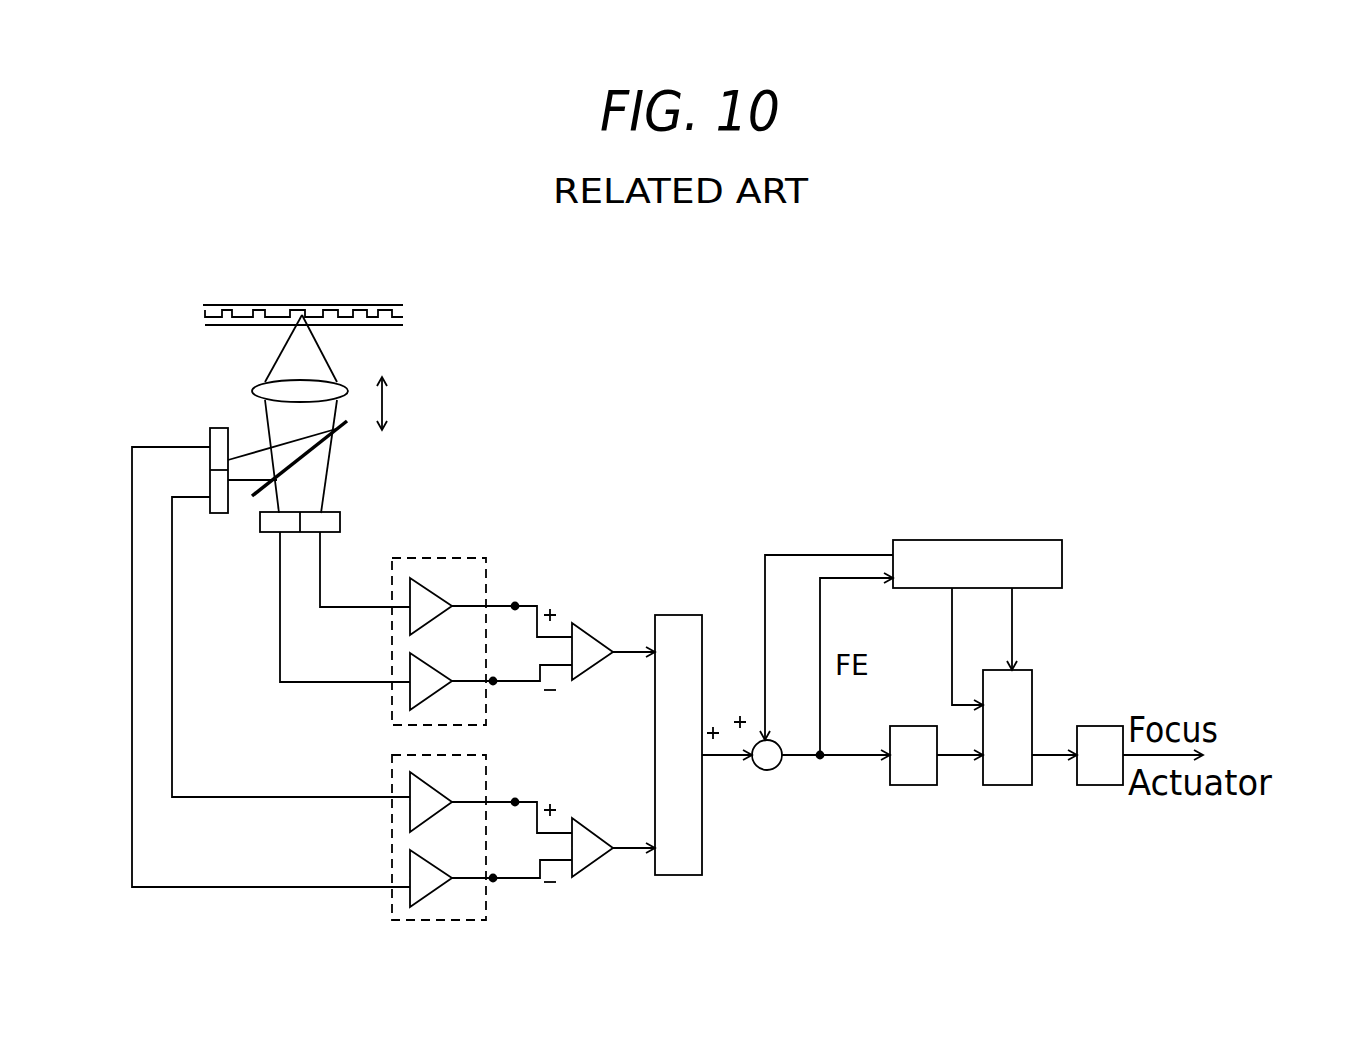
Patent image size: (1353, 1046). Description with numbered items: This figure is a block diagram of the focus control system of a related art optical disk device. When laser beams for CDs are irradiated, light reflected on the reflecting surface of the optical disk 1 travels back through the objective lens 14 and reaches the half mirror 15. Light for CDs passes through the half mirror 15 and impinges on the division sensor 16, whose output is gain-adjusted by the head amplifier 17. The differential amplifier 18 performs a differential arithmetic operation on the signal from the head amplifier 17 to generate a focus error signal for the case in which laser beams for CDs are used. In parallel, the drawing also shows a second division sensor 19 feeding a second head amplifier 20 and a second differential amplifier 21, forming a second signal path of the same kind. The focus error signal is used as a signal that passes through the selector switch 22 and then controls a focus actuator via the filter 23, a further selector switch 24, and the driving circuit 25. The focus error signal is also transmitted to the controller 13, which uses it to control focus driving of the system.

The optical disk 1 is at (342, 303).
The controller 13 is at (958, 540).
The objective lens 14 is at (337, 385).
The half mirror 15 is at (336, 429).
The division sensor 16 is at (340, 525).
The head amplifier 17 is at (452, 558).
The differential amplifier 18 is at (597, 639).
The division sensor 19 is at (210, 435).
The head amplifier 20 is at (486, 780).
The differential amplifier 21 is at (597, 833).
The selector switch 22 is at (688, 613).
The filter 23 is at (908, 785).
The selector switch 24 is at (997, 785).
The driving circuit 25 is at (1095, 785).